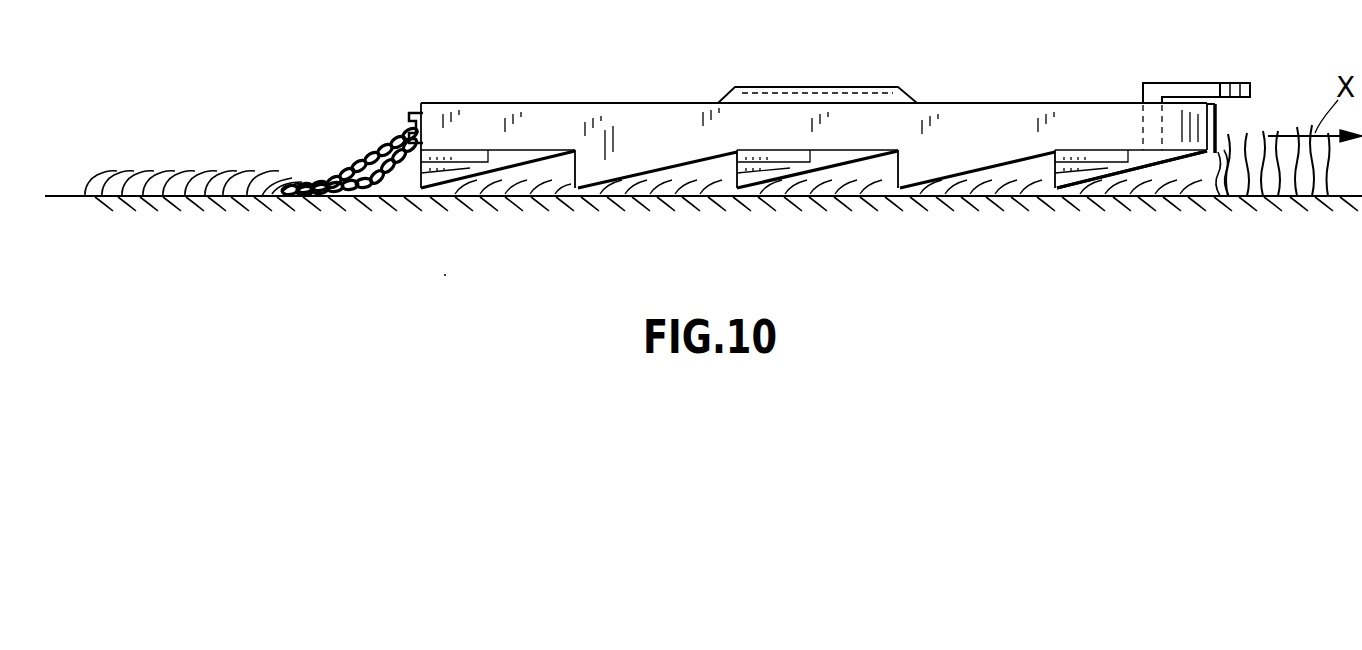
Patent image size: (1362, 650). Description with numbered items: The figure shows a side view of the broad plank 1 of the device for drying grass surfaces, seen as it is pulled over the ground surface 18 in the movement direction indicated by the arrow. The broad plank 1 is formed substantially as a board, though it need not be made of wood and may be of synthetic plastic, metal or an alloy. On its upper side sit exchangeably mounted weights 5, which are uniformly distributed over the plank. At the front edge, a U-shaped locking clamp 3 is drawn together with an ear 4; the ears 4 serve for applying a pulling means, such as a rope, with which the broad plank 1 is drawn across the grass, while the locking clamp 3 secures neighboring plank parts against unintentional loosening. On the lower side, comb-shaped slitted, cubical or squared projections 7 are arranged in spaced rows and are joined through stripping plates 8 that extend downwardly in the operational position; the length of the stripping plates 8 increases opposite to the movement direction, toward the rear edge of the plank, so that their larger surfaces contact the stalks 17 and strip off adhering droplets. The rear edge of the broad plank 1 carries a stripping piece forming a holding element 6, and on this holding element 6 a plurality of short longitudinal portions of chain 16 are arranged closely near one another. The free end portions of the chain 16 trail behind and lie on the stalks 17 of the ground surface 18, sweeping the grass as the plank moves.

The broad plank 1 is at (510, 113).
The U-shaped locking clamp 3 is at (1152, 108).
The ear 4 is at (1238, 82).
The weight 5 is at (868, 93).
The holding element 6 is at (407, 112).
The slitted, cubical or squared projection 7 is at (928, 170).
The stripping plate 8 is at (1098, 190).
The chain 16 is at (316, 178).
The stalk 17 is at (217, 168).
The ground surface 18 is at (84, 199).